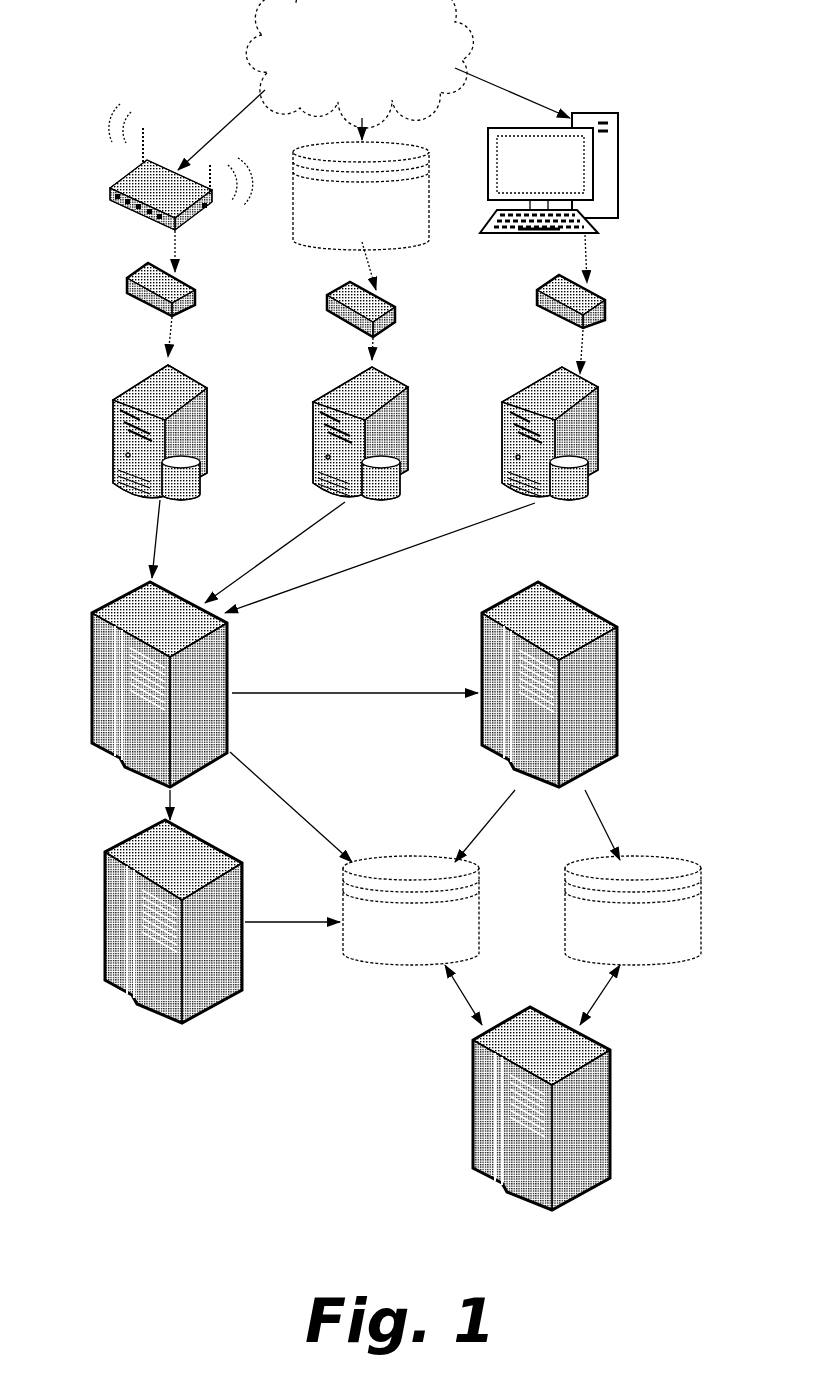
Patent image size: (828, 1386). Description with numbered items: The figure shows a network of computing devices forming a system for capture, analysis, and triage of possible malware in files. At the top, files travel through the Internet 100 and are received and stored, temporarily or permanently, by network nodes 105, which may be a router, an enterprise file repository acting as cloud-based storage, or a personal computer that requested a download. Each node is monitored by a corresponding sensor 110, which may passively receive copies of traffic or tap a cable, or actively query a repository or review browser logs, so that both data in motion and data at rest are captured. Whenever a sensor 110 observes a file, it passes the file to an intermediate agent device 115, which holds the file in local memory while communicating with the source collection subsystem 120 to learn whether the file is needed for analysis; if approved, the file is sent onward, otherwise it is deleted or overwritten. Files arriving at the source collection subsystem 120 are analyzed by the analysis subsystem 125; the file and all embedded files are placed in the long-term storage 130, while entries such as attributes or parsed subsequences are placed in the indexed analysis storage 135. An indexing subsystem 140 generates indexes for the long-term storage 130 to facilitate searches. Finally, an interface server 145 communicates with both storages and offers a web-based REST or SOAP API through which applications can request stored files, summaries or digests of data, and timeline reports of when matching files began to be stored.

The Internet 100 is at (359, 64).
The network node 105 is at (122, 184).
The sensor 110 is at (134, 283).
The intermediate agent device 115 is at (115, 406).
The source collection subsystem 120 is at (115, 596).
The analysis subsystem 125 is at (588, 606).
The long-term storage 130 is at (411, 910).
The indexed analysis storage 135 is at (633, 910).
The indexing subsystem 140 is at (120, 842).
The interface server 145 is at (473, 1106).